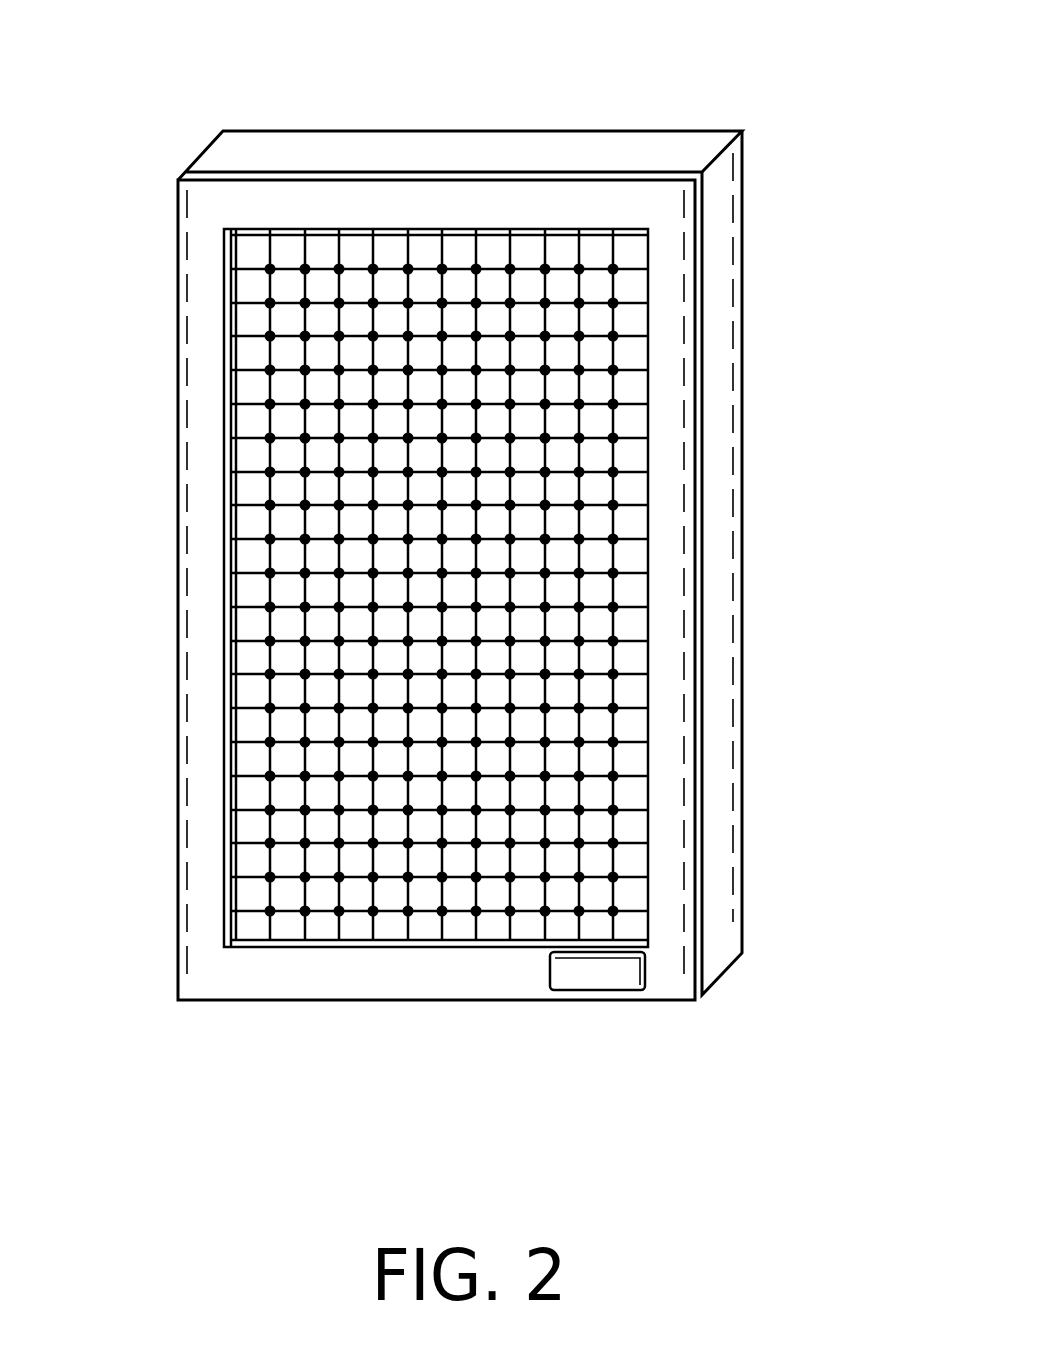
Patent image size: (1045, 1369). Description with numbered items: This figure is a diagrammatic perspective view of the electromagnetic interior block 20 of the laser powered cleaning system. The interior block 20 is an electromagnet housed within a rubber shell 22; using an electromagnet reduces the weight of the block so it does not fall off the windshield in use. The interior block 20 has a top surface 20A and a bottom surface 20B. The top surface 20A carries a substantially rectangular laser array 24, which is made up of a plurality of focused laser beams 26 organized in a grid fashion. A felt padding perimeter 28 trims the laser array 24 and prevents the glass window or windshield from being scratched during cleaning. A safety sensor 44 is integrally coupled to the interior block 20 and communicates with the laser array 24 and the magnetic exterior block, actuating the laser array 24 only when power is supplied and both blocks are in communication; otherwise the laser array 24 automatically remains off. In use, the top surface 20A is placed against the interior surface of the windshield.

The interior block 20 is at (492, 592).
The top surface 20A is at (197, 598).
The bottom surface 20B is at (628, 133).
The rubber shell 22 is at (727, 828).
The laser array 24 is at (320, 792).
The focused laser beams 26 is at (404, 880).
The felt padding perimeter 28 is at (662, 312).
The safety sensor 44 is at (597, 1025).